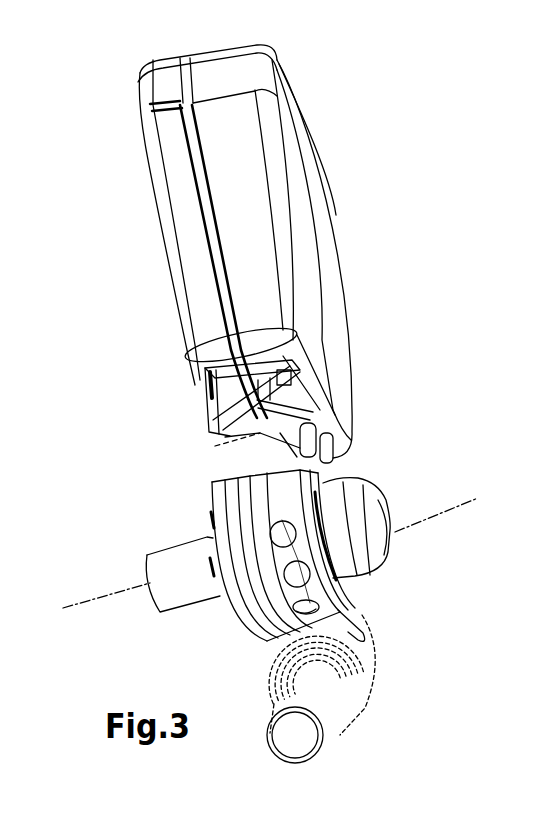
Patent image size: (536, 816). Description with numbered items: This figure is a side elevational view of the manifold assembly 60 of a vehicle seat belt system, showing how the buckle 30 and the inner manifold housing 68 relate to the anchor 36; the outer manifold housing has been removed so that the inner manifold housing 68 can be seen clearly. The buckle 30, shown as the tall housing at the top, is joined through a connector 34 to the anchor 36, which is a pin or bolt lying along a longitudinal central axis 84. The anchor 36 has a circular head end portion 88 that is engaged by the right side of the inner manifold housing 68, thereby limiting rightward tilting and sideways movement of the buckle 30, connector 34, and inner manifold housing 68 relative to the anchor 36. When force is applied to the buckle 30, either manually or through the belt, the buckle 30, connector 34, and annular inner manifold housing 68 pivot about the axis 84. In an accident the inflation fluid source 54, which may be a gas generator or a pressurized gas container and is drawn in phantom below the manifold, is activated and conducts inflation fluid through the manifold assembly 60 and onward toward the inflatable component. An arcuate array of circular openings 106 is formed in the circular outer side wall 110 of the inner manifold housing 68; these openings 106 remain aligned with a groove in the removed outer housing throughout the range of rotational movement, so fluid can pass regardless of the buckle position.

The buckle 30 is at (332, 291).
The connector 34 is at (230, 422).
The anchor 36 is at (180, 600).
The inflation fluid source 54 is at (320, 707).
The manifold assembly 60 is at (330, 430).
The inner manifold housing 68 is at (313, 549).
The longitudinal central axis 84 is at (110, 595).
The circular head end portion 88 is at (362, 498).
The circular openings 106 is at (265, 505).
The circular outer side wall 110 is at (215, 446).